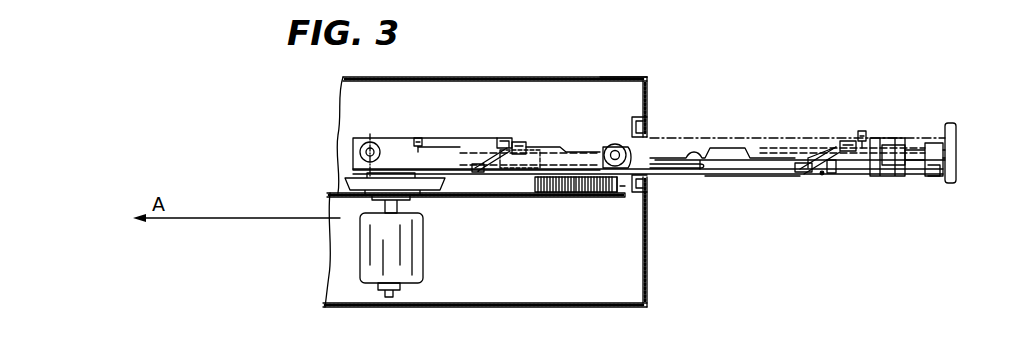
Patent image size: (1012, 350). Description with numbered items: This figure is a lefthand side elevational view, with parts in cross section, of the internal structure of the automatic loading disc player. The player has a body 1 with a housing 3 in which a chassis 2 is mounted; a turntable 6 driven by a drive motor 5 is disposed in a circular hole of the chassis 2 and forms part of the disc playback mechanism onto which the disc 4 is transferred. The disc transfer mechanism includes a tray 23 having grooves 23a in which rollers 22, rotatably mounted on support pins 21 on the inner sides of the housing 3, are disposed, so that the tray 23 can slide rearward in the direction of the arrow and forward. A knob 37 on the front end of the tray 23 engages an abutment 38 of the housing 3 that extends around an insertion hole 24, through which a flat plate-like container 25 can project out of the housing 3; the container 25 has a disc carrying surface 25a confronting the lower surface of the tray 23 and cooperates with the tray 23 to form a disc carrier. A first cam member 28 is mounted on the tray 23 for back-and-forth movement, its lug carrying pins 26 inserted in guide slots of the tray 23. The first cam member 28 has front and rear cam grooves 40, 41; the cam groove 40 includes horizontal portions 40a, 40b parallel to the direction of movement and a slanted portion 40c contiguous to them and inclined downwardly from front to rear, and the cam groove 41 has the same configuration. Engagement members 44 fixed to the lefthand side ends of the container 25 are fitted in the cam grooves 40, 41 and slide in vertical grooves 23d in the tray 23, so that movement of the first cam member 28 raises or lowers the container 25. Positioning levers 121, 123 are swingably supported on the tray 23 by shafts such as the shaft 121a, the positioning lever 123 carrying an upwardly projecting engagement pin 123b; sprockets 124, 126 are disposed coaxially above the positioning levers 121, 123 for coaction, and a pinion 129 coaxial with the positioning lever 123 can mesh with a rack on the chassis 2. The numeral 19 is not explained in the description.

The body 1 is at (640, 70).
The chassis 2 is at (470, 198).
The housing 3 is at (475, 77).
The disc 4 is at (672, 153).
The drive motor 5 is at (362, 260).
The turntable 6 is at (438, 188).
The carriage 19 is at (784, 118).
The support pin 21 is at (370, 150).
The roller 22 is at (347, 146).
The tray 23 is at (728, 136).
The groove 23a is at (937, 142).
The vertical groove 23d is at (517, 172).
The insertion hole 24 is at (656, 190).
The container 25 is at (742, 156).
The disc carrying surface 25a is at (700, 174).
The pin 26 is at (416, 140).
The first cam member 28 is at (762, 176).
The knob 37 is at (956, 152).
The abutment 38 is at (650, 124).
The cam groove 40 is at (821, 176).
The horizontal portion 40a is at (812, 150).
The horizontal portion 40b is at (805, 172).
The slanted portion 40c is at (831, 174).
The cam groove 41 is at (487, 158).
The engagement member 44 is at (524, 142).
The positioning lever 121 is at (920, 174).
The shaft 121a is at (893, 142).
The positioning lever 123 is at (577, 178).
The engagement pin 123b is at (500, 144).
The sprocket 124 is at (931, 176).
The sprocket 126 is at (597, 178).
The pinion 129 is at (619, 198).